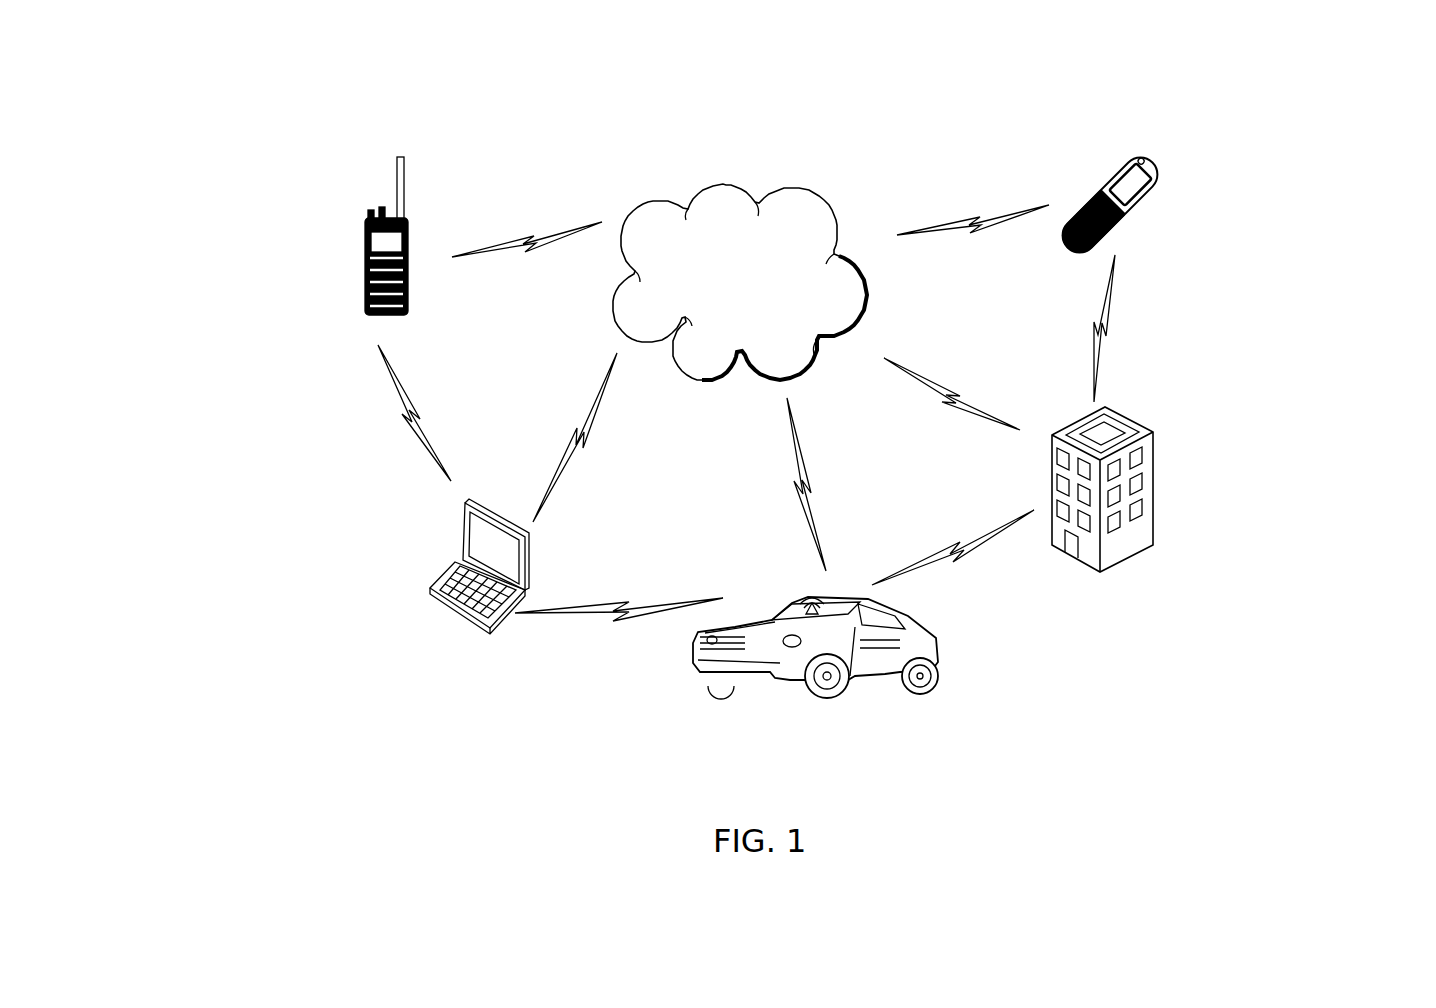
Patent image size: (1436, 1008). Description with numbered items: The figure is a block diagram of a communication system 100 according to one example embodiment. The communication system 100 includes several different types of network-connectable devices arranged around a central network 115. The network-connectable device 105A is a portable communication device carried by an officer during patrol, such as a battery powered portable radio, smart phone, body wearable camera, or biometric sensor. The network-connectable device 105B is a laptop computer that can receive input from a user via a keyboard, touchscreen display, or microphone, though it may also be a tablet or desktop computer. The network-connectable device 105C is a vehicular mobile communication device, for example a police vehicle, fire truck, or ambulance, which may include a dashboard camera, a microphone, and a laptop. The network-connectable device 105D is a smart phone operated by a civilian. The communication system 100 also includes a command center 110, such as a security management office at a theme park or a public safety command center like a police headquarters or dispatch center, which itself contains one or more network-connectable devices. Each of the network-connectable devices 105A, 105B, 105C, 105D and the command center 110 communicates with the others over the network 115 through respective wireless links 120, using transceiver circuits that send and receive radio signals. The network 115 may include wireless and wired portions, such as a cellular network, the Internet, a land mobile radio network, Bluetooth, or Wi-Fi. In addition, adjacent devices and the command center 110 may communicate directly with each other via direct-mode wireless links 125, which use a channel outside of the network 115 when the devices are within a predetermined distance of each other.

The communication system 100 is at (295, 101).
The network-connectable device 105A is at (365, 302).
The network-connectable device 105B is at (432, 590).
The network-connectable device 105C is at (868, 688).
The network-connectable device 105D is at (1135, 213).
The command center 110 is at (1153, 493).
The network 115 is at (613, 309).
The wireless link 120 is at (540, 232).
The direct-mode wireless link 125 is at (398, 396).